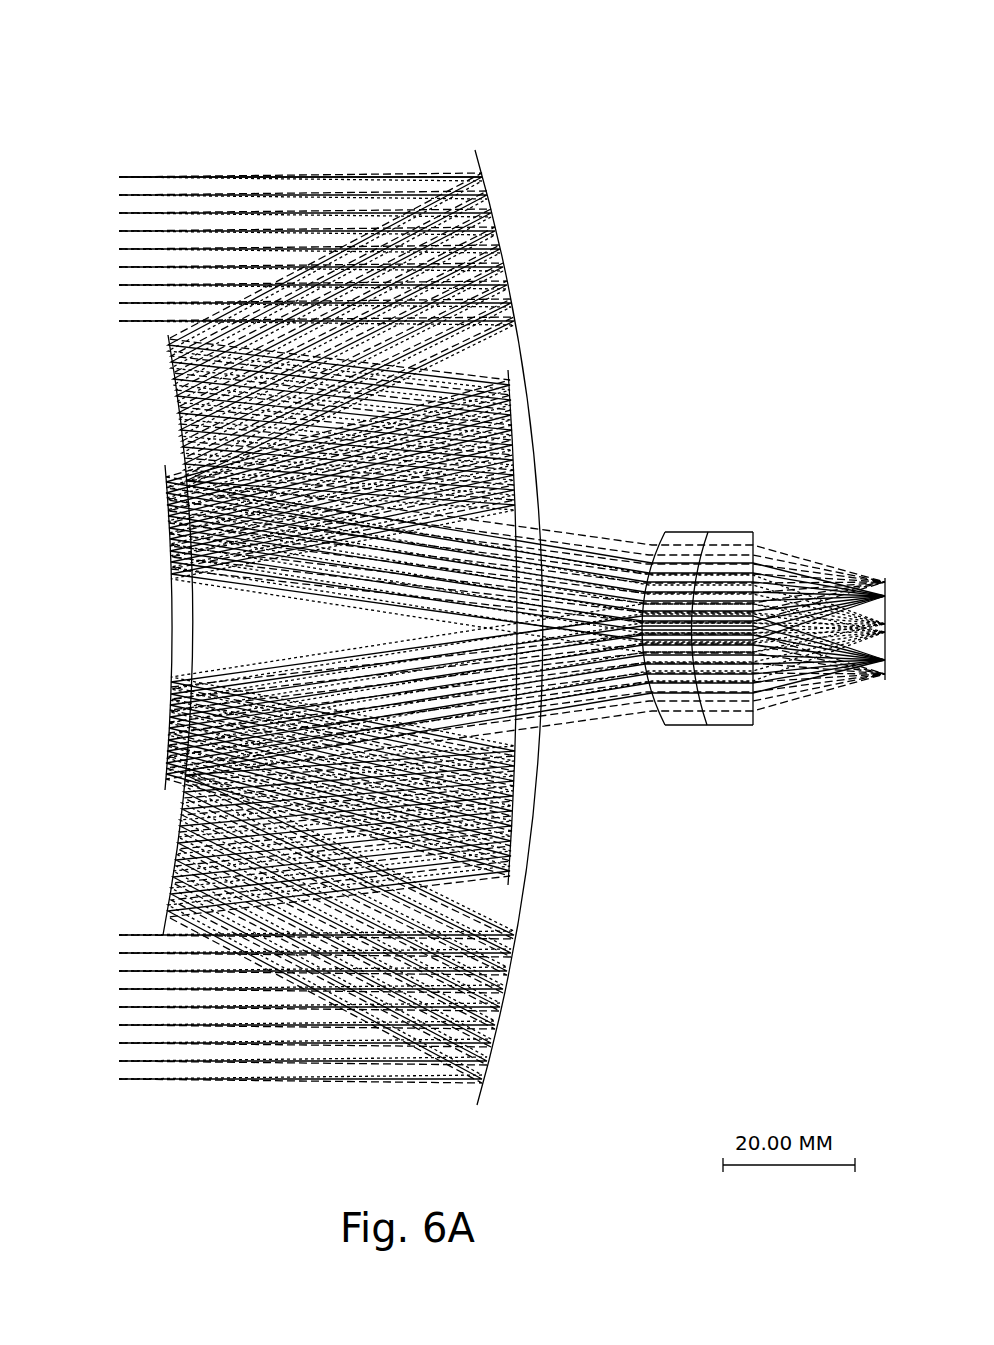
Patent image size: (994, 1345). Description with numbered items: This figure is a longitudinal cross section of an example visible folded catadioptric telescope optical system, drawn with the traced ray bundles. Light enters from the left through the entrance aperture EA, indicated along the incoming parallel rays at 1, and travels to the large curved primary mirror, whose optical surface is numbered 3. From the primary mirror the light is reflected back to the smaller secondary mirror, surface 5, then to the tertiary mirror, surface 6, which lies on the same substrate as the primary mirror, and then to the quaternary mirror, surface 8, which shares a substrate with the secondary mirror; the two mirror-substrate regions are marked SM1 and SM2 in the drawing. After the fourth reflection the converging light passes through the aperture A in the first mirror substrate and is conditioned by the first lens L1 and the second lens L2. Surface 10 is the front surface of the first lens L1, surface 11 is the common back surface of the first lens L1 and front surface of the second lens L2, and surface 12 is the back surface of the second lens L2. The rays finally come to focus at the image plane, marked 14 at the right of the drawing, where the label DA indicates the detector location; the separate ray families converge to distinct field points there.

The incoming light beam 1 is at (187, 177).
The surface corresponding to the primary mirror 3 is at (477, 150).
The surface corresponding to the secondary mirror 5 is at (160, 323).
The surface corresponding to the tertiary mirror 6 is at (510, 370).
The surface corresponding to the quaternary mirror 8 is at (163, 462).
The front surface of the first lens 10 is at (664, 532).
The back surface of the first lens and front surface of the second lens 11 is at (708, 532).
The back surface of the second lens 12 is at (752, 532).
The image plane / detector 14 is at (885, 578).
The entrance aperture EA is at (296, 140).
The first sub-module SM1 is at (108, 445).
The second sub-module SM2 is at (573, 263).
The aperture in the first mirror substrate A is at (558, 525).
The first lens L1 is at (685, 727).
The second lens L2 is at (740, 727).
The detector array DA is at (865, 705).